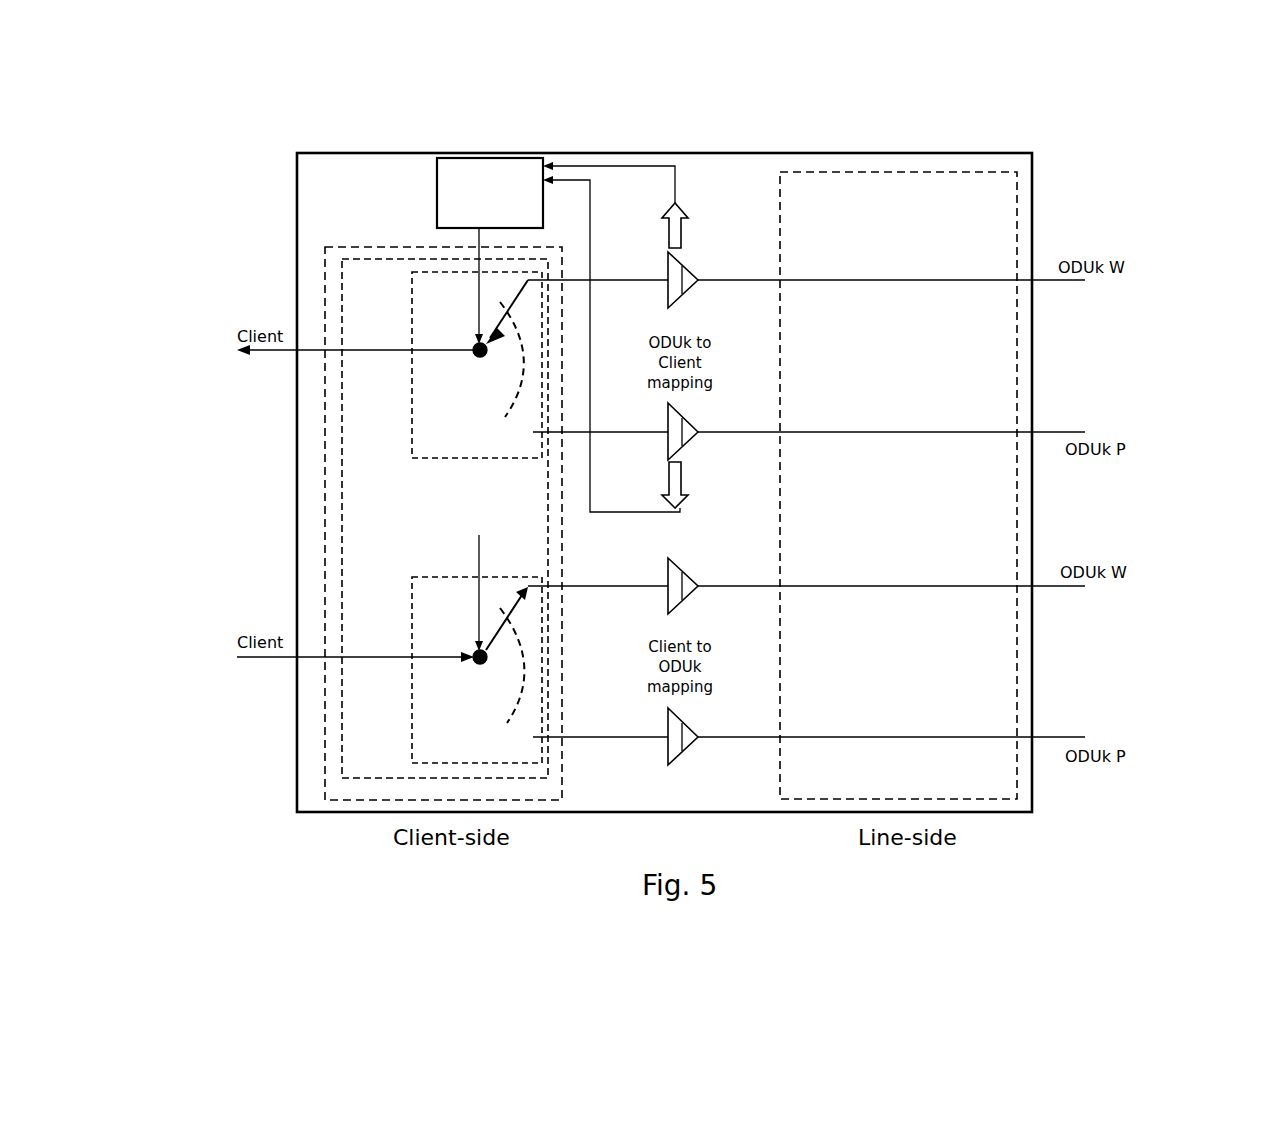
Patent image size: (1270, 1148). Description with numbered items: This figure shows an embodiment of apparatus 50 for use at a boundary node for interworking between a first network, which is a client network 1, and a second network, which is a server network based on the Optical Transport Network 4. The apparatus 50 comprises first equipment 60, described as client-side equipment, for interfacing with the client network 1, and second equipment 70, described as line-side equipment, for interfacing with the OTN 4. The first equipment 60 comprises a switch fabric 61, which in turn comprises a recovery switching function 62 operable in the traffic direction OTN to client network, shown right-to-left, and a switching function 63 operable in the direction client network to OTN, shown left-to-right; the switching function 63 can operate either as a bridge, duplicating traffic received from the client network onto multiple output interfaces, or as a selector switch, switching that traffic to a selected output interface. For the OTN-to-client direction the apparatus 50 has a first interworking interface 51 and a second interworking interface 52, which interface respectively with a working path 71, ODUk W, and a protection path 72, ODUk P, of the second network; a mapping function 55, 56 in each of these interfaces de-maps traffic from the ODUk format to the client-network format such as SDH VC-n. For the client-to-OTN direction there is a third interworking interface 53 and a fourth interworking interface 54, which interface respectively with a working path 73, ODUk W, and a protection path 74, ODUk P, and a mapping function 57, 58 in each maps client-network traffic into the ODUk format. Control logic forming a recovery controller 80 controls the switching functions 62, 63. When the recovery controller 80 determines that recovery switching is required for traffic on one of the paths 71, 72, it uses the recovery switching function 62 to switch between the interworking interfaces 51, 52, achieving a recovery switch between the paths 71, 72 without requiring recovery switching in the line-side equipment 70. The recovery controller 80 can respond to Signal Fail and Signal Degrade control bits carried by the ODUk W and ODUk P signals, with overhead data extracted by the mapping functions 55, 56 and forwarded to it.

The client network 1 is at (225, 502).
The Optical Transport Network 4 is at (1205, 486).
The apparatus 50 is at (297, 178).
The first interworking interface 51 is at (655, 280).
The second interworking interface 52 is at (655, 432).
The third interworking interface 53 is at (655, 586).
The fourth interworking interface 54 is at (655, 737).
The mapping function 55 is at (690, 288).
The mapping function 56 is at (690, 440).
The mapping function 57 is at (690, 594).
The mapping function 58 is at (690, 745).
The first equipment 60 is at (375, 247).
The switch fabric 61 is at (342, 305).
The recovery switching function 62 is at (412, 316).
The switching function 63 is at (412, 623).
The second equipment 70 is at (890, 172).
The working path 71 is at (855, 280).
The protection path 72 is at (865, 432).
The working path 73 is at (855, 586).
The protection path 74 is at (865, 737).
The recovery controller 80 is at (437, 195).